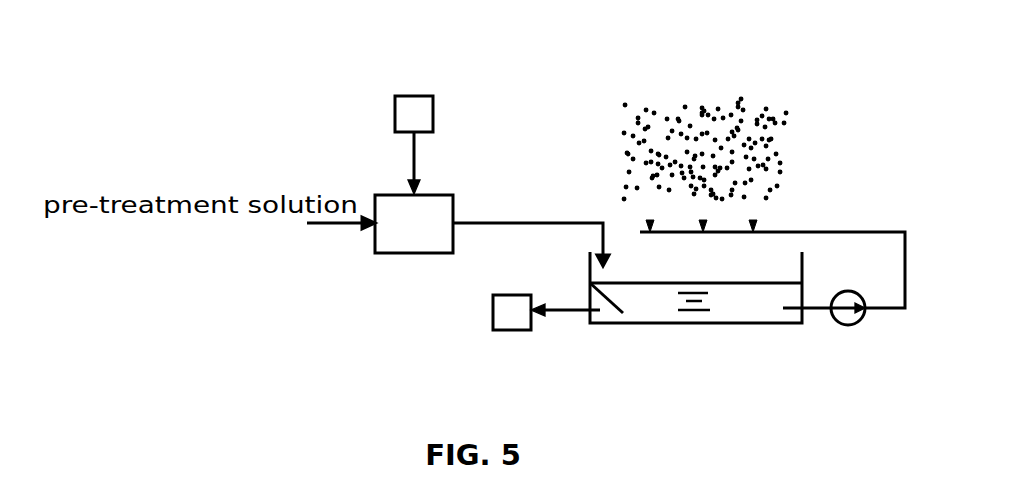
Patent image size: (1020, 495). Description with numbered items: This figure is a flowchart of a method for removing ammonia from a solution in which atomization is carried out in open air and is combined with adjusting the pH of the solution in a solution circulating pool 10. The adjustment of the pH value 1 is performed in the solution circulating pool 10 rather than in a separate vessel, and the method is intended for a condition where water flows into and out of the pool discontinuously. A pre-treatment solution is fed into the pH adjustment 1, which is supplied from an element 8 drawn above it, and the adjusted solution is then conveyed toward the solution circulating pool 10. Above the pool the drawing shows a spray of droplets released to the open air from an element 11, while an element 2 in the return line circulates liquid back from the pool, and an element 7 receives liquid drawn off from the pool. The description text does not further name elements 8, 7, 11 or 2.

The adjustment of the pH value 1 is at (414, 224).
The pre-treatment solution supply 8 is at (414, 145).
The discharge / outlet 7 is at (546, 312).
The solution circulating pool 10 is at (594, 295).
The spray pipe 11 is at (755, 222).
The pump 2 is at (772, 293).